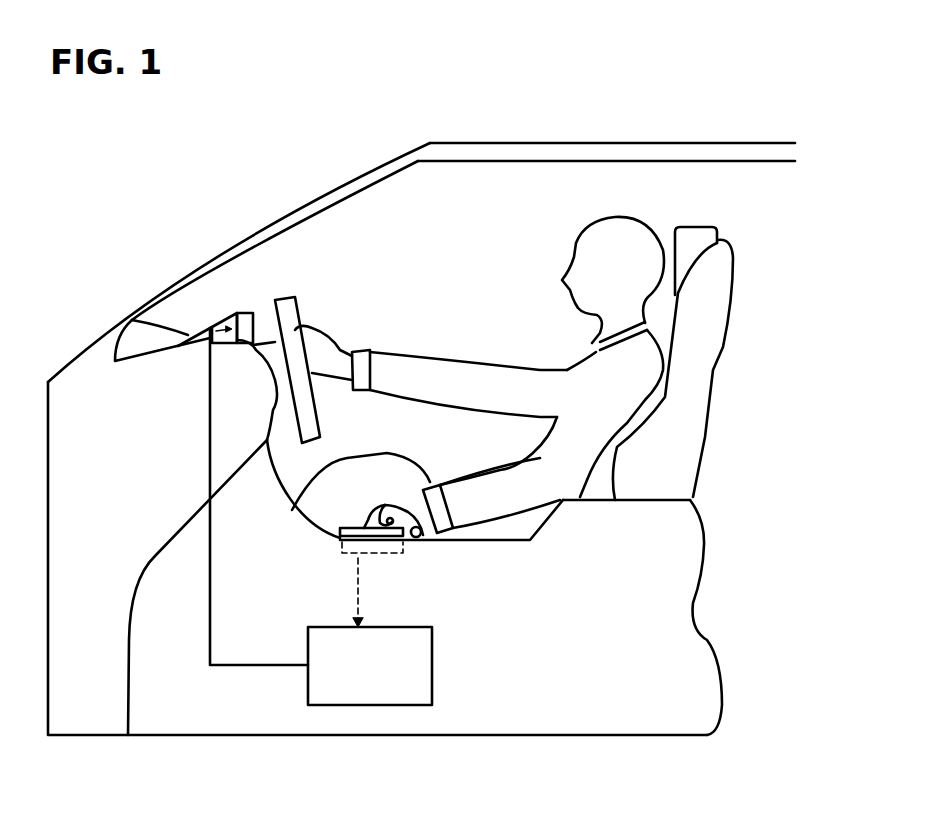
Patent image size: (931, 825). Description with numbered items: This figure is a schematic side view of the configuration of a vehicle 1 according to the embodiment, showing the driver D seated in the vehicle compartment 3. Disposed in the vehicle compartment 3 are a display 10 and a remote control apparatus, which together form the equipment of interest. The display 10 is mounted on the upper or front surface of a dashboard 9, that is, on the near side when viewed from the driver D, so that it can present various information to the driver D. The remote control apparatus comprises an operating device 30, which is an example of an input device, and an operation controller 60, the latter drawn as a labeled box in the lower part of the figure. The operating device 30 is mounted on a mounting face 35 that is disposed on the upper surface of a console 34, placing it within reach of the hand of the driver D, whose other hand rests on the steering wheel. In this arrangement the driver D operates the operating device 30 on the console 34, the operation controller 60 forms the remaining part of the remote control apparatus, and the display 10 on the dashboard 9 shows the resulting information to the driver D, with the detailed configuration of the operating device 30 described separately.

The vehicle 1 is at (250, 182).
The vehicle compartment 3 is at (396, 235).
The dashboard 9 is at (193, 340).
The display 10 is at (214, 300).
The operating device 30 is at (342, 548).
The console 34 is at (638, 616).
The mounting face 35 is at (423, 537).
The operation controller 60 is at (308, 682).
The driver D is at (625, 212).